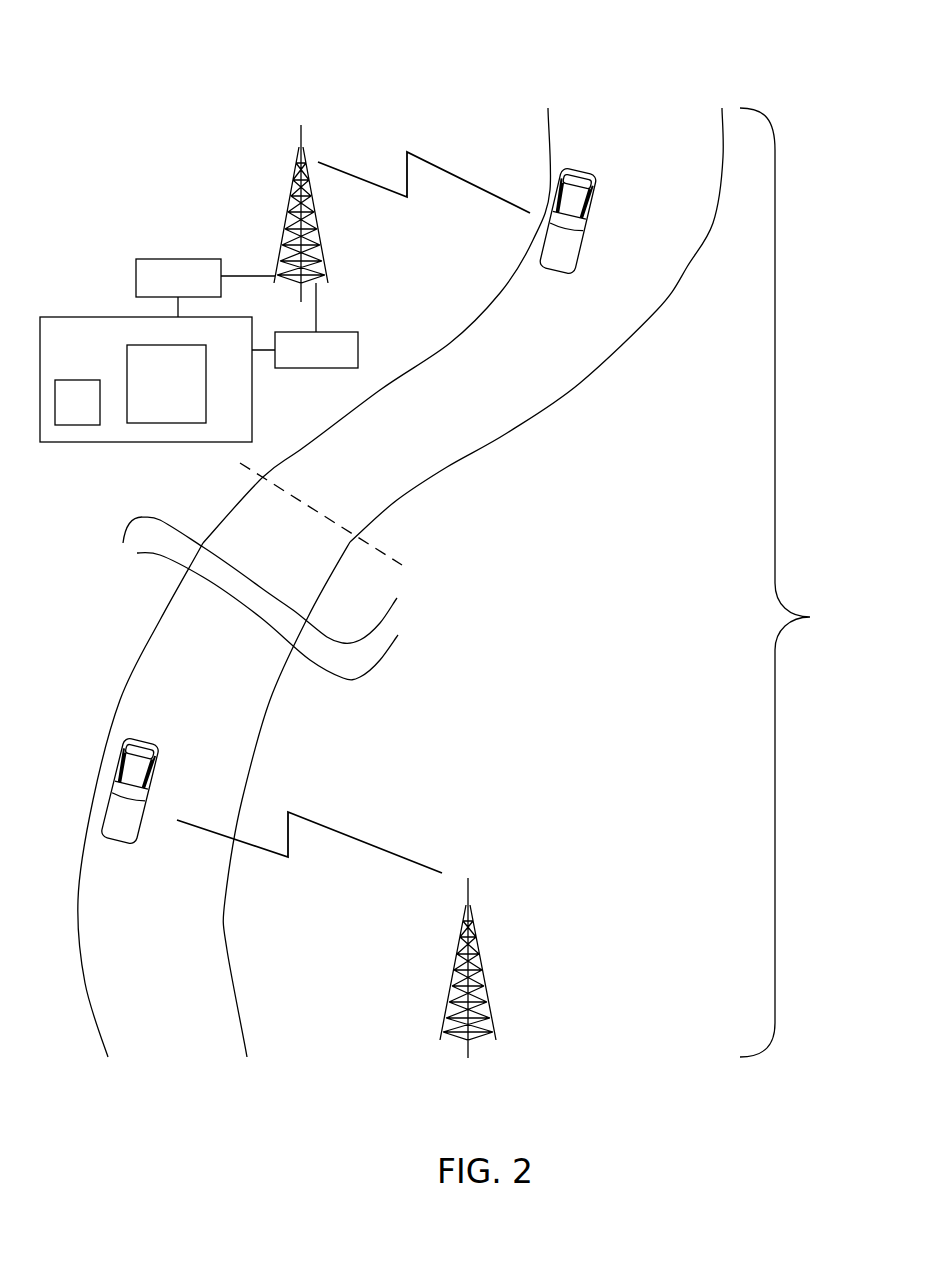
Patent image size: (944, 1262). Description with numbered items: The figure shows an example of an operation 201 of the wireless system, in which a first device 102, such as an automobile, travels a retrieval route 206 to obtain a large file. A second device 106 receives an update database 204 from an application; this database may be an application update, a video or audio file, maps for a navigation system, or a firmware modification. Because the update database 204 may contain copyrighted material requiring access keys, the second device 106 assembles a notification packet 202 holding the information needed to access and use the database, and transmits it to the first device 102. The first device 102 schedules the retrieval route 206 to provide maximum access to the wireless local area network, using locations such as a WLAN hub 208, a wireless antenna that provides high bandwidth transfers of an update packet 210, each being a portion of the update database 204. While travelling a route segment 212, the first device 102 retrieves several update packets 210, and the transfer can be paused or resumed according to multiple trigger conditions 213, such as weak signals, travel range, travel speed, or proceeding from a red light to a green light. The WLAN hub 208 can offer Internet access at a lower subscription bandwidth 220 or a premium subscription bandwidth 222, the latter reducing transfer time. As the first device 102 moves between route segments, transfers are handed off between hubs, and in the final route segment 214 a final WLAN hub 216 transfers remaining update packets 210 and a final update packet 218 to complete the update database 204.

The operation 201 is at (180, 58).
The first device 102 is at (572, 197).
The second device 106 is at (146, 379).
The update database 204 is at (166, 384).
The notification packet 202 is at (78, 425).
The WLAN hub 208 is at (283, 238).
The update packet 210 is at (458, 178).
The route segment 212 is at (463, 325).
The multiple trigger conditions 213 is at (383, 548).
The final route segment 214 is at (214, 799).
The retrieval route 206 is at (810, 617).
The final WLAN hub 216 is at (480, 985).
The final update packet 218 is at (380, 848).
The lower subscription bandwidth 220 is at (305, 325).
The premium subscription bandwidth 222 is at (205, 288).